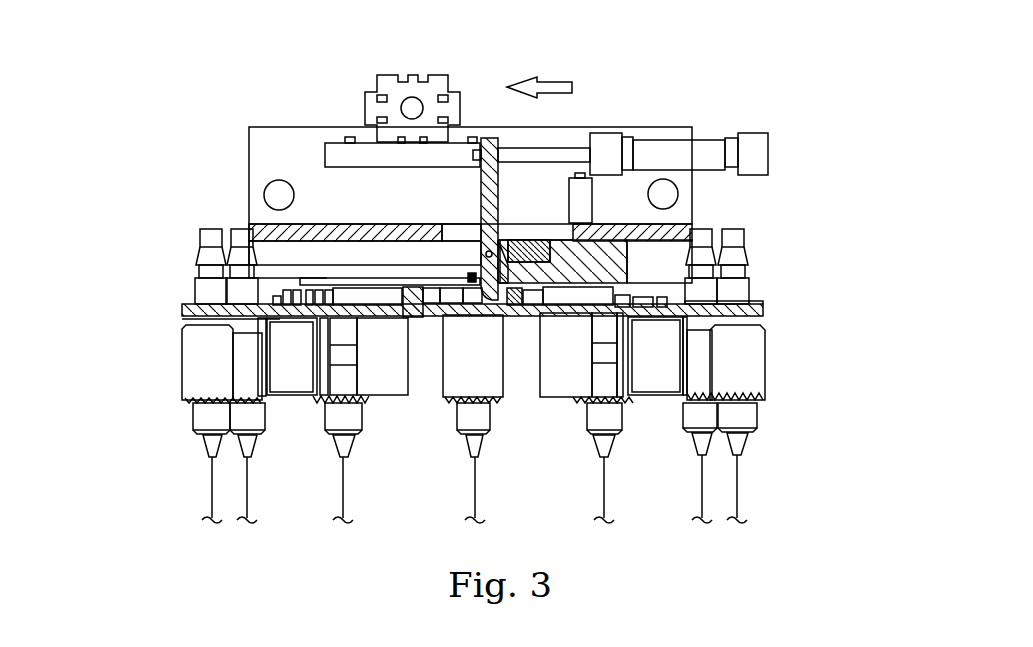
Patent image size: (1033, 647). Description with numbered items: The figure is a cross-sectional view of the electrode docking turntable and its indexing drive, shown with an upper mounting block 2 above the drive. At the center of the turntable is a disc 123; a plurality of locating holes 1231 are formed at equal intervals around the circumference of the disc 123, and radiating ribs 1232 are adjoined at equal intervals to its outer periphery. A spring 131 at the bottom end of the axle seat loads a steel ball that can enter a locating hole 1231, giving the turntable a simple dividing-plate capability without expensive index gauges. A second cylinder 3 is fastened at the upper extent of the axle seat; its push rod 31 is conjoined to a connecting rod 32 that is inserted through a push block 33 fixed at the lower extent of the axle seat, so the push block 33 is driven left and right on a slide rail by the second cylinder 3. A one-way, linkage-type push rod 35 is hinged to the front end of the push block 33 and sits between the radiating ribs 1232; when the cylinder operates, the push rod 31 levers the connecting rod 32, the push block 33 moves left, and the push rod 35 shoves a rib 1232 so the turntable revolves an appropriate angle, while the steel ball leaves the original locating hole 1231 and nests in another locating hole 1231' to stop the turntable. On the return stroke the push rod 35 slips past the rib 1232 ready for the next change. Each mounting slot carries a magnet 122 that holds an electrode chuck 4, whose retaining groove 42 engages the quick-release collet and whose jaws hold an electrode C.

The connecting block 2 is at (382, 80).
The second cylinder 3 is at (677, 153).
The push rod 31 is at (548, 148).
The connecting rod 32 is at (481, 187).
The push block 33 is at (627, 258).
The one-way, linkage-type push rod 35 is at (481, 266).
The spring 131 is at (467, 279).
The electrode chuck 4 is at (197, 360).
The retaining groove 42 is at (748, 271).
The magnet 122 is at (467, 281).
The disc 123 is at (613, 283).
The locating hole 1231 is at (421, 388).
The locating hole 1231' is at (550, 379).
The radiating rib 1232 is at (472, 290).
The electrode C is at (737, 482).